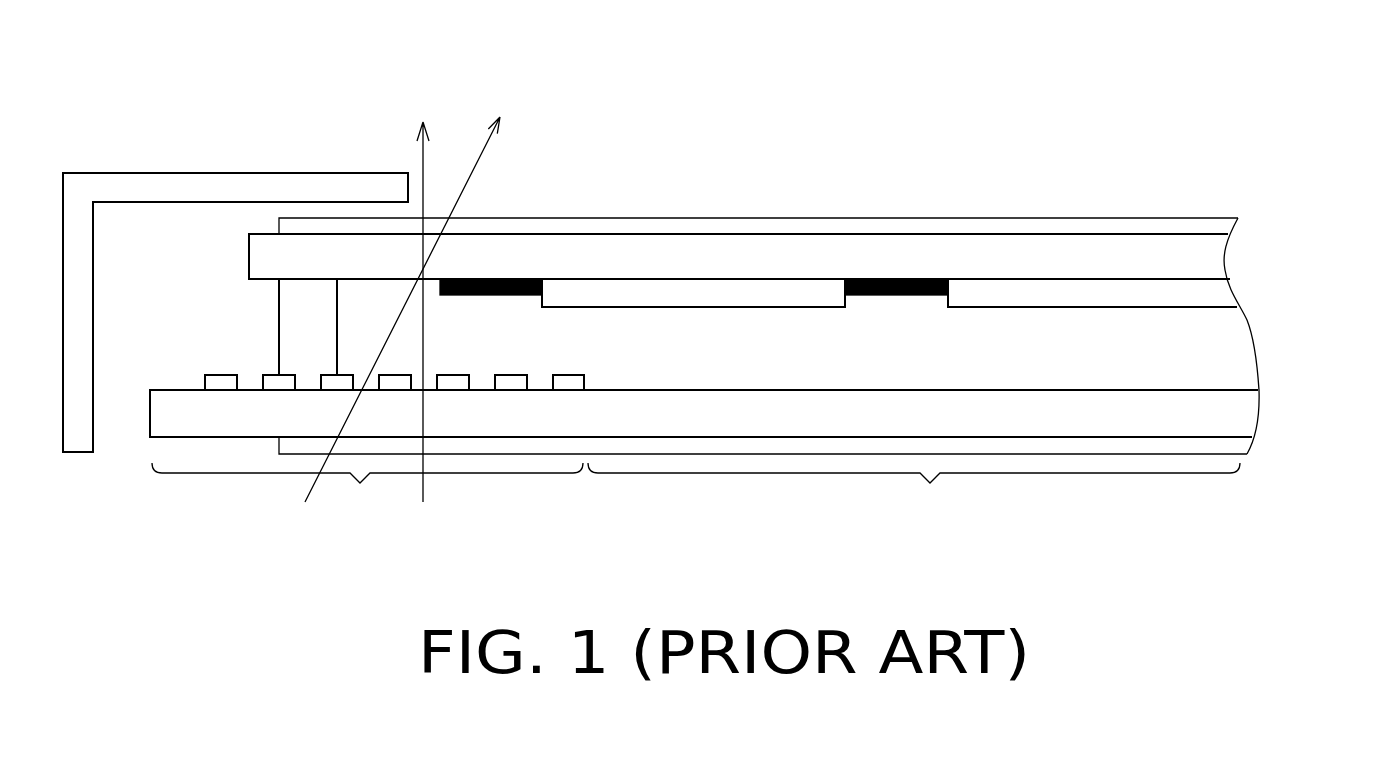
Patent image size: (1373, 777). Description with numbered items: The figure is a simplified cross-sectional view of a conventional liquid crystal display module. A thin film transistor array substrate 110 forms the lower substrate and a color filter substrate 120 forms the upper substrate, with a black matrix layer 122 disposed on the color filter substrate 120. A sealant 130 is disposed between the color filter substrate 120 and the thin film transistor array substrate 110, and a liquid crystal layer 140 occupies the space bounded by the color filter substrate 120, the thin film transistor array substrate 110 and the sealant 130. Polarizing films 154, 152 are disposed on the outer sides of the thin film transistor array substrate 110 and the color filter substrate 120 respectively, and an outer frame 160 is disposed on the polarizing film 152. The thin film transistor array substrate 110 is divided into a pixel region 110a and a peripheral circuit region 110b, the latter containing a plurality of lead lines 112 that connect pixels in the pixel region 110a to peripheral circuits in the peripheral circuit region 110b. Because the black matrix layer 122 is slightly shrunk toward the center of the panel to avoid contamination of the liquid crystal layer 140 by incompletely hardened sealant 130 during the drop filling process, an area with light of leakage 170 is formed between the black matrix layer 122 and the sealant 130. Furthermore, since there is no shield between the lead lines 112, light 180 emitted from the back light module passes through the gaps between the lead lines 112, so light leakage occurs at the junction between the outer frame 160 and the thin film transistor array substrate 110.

The thin film transistor array substrate 110 is at (1247, 410).
The pixel region 110a is at (914, 500).
The peripheral circuit region 110b is at (367, 499).
The lead lines 112 is at (570, 383).
The color filter substrate 120 is at (1253, 235).
The black matrix layer 122 is at (510, 279).
The sealant 130 is at (300, 305).
The liquid crystal layer 140 is at (1247, 355).
The polarizing film 152 is at (1222, 225).
The polarizing film 154 is at (1238, 445).
The outer frame 160 is at (196, 190).
The light of leakage 170 is at (397, 277).
The light 180 is at (427, 172).